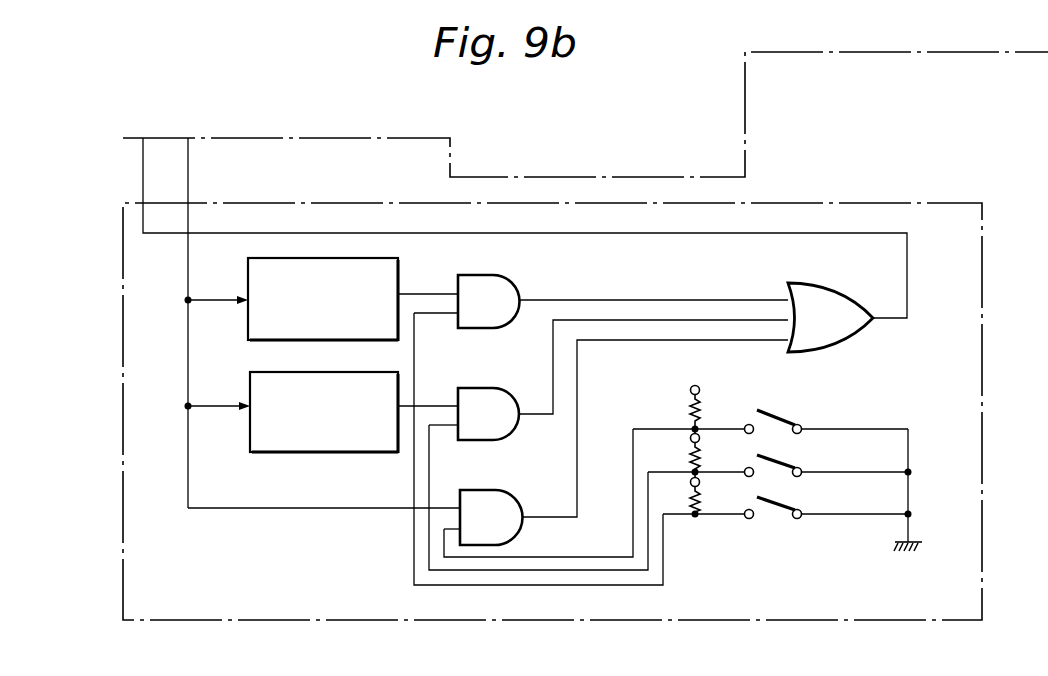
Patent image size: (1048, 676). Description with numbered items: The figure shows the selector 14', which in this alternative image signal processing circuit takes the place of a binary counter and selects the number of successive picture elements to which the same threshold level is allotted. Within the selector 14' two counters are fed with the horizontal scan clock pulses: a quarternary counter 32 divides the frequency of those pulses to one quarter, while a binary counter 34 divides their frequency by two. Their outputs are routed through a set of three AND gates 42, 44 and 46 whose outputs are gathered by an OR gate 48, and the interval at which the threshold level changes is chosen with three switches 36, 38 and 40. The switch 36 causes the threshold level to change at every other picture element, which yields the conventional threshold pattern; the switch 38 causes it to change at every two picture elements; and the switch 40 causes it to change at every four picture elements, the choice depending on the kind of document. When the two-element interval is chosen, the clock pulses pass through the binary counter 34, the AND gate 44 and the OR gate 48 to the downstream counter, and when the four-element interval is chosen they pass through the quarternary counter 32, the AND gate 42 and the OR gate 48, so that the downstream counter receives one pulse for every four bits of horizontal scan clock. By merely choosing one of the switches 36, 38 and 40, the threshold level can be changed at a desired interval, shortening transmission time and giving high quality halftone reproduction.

The selector 14' is at (1010, 293).
The quarternary counter 32 is at (248, 270).
The binary counter 34 is at (250, 369).
The switch 36 is at (784, 414).
The switch 38 is at (786, 458).
The switch 40 is at (789, 496).
The AND gate 42 is at (507, 277).
The AND gate 44 is at (501, 385).
The AND gate 46 is at (504, 491).
The OR gate 48 is at (845, 284).